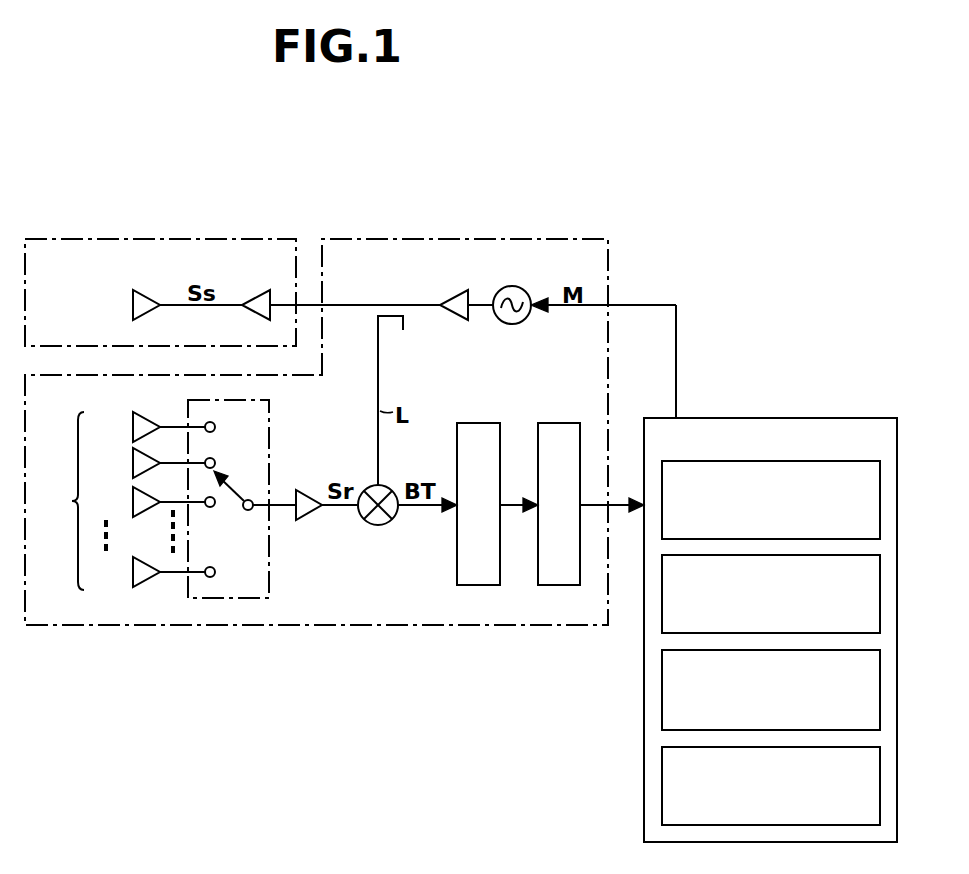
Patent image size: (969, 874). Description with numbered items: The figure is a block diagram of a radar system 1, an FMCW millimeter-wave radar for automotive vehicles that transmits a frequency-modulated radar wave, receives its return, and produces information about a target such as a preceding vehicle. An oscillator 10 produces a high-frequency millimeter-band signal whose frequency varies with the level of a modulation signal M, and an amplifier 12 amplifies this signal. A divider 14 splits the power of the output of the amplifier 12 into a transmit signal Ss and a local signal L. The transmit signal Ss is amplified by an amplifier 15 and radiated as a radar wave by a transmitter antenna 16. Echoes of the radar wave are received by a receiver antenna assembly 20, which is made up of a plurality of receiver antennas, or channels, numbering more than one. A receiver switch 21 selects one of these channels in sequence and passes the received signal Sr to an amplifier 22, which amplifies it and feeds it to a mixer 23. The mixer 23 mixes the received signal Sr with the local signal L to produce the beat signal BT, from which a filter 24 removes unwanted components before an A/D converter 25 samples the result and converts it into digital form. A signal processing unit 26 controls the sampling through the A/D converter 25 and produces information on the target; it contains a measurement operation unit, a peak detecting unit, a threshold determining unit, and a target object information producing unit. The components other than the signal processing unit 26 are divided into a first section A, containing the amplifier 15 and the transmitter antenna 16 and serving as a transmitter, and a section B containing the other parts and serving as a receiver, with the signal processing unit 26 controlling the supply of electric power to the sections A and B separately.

The radar system 1 is at (214, 189).
The first section A is at (84, 238).
The section B is at (571, 238).
The oscillator 10 is at (512, 287).
The amplifier 12 is at (457, 290).
The divider 14 is at (369, 311).
The amplifier 15 is at (261, 290).
The transmitter antenna 16 is at (145, 291).
The receiver antenna assembly 20 is at (105, 501).
The receiver switch 21 is at (270, 410).
The amplifier 22 is at (305, 520).
The mixer 23 is at (377, 527).
The filter 24 is at (474, 422).
The A/D converter 25 is at (554, 422).
The signal processing unit 26 is at (695, 418).